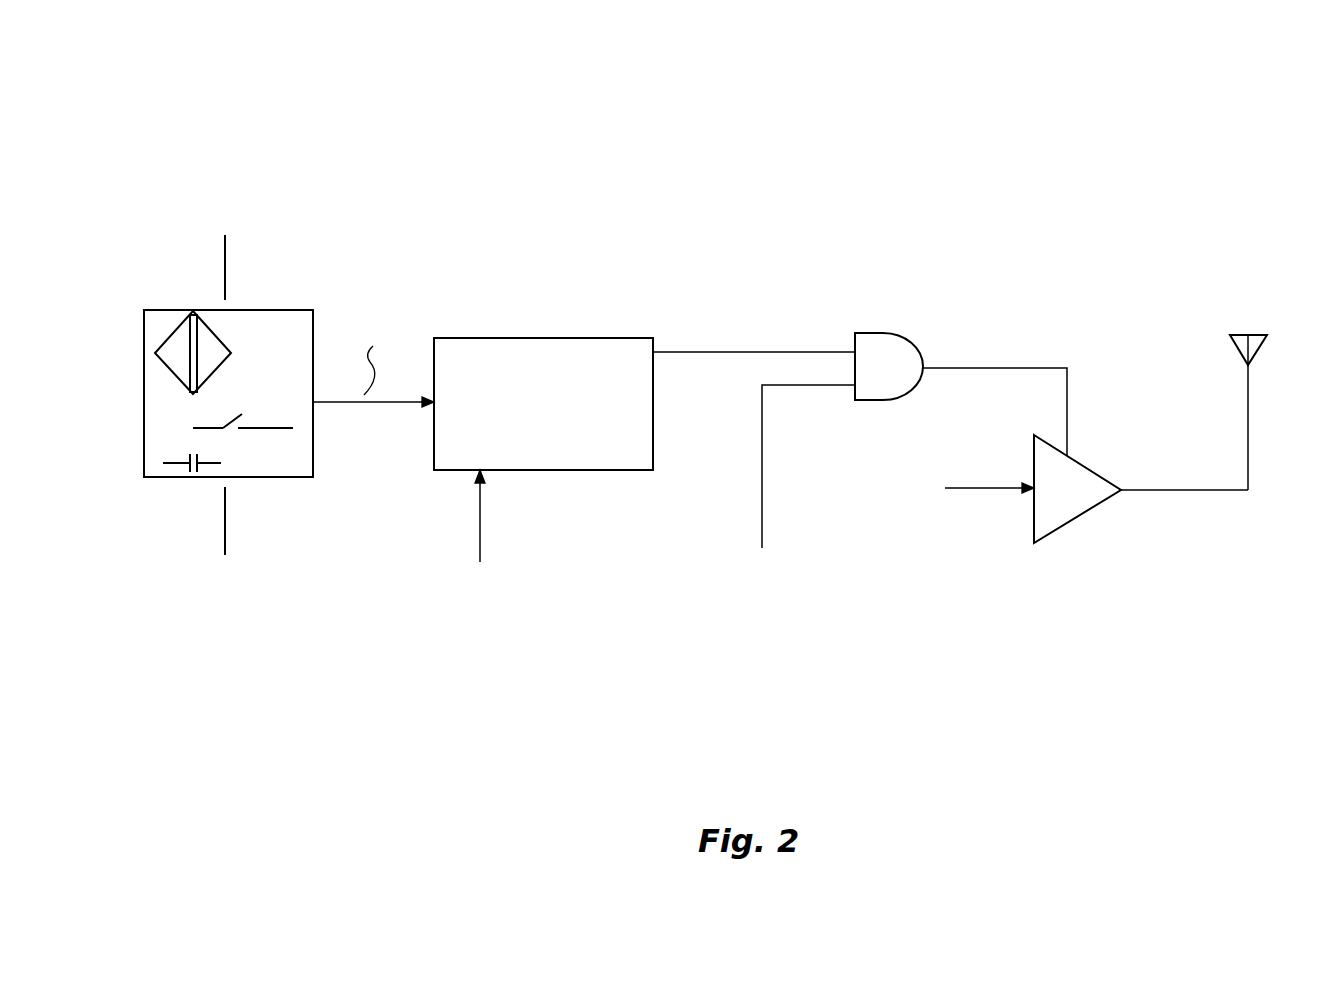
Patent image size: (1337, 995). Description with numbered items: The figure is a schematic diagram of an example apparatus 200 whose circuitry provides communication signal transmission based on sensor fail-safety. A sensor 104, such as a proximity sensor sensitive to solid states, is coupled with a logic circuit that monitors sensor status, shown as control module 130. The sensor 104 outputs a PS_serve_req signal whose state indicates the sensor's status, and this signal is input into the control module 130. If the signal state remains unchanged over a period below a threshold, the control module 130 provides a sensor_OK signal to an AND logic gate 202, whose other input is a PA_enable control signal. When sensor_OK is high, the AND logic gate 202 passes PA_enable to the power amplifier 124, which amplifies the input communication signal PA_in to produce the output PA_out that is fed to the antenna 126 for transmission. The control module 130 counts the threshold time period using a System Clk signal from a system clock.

The apparatus 200 is at (970, 118).
The sensor 104 is at (295, 346).
The control module 130 is at (620, 364).
The AND logic gate 202 is at (907, 383).
The power amplifier 124 is at (1066, 522).
The antenna 126 is at (1254, 368).